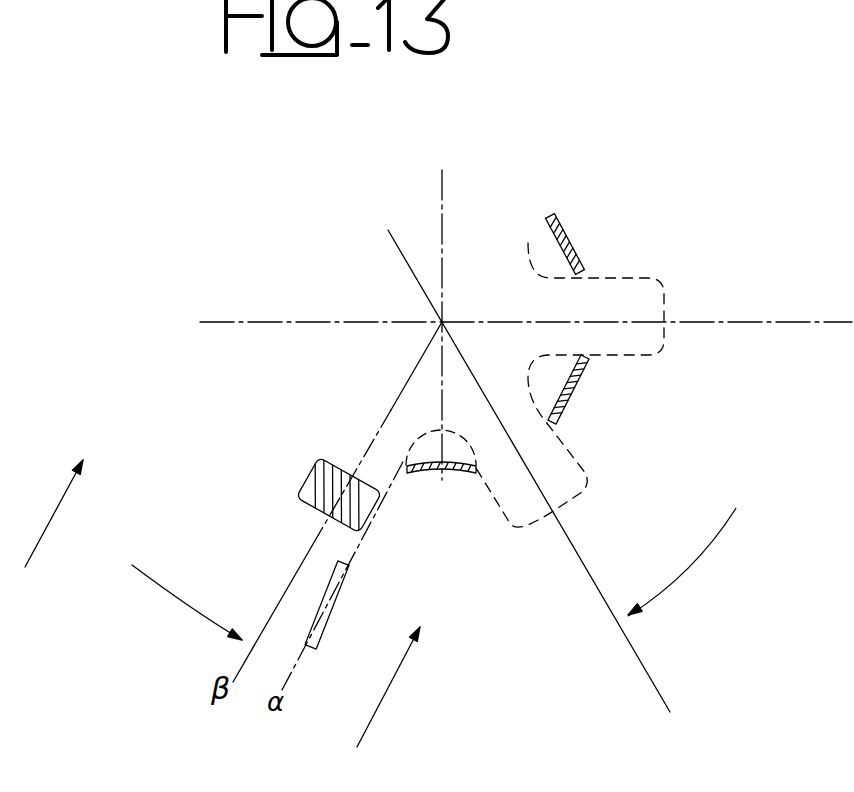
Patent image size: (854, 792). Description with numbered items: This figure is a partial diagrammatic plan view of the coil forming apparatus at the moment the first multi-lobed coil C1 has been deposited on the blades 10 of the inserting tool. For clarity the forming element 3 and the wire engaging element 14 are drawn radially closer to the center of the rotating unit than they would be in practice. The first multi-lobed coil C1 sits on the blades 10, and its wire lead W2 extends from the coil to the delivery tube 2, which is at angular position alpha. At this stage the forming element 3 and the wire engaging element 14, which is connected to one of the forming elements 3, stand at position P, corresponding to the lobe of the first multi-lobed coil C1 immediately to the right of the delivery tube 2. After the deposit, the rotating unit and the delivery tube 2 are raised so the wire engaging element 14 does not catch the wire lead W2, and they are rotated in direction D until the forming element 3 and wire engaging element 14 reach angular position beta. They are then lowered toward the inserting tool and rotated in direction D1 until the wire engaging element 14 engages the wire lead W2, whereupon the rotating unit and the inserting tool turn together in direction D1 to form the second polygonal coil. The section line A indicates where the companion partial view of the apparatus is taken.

The delivery tube 2 is at (343, 592).
The forming element 3 is at (302, 487).
The blades 10 is at (572, 240).
The wire engaging element 14 is at (333, 463).
The first multi-lobed coil C1 is at (665, 323).
The wire lead W2 is at (359, 545).
The direction of rotation D is at (710, 548).
The direction of rotation D1 is at (168, 593).
The section line A— A is at (218, 603).
The position P is at (542, 483).